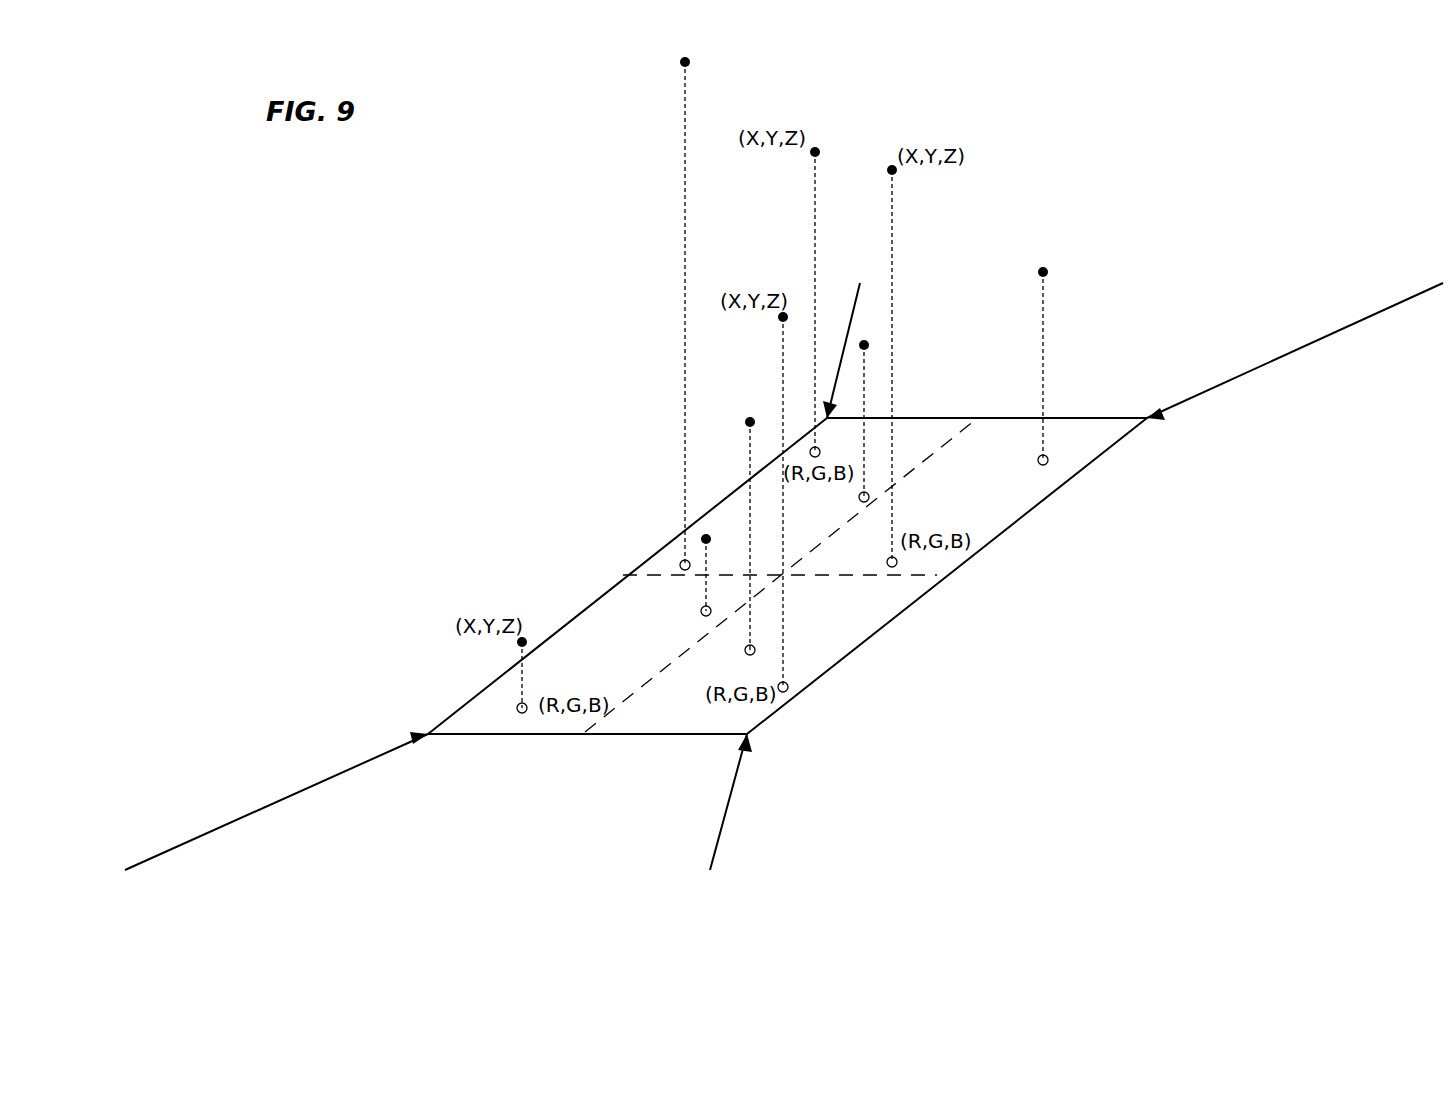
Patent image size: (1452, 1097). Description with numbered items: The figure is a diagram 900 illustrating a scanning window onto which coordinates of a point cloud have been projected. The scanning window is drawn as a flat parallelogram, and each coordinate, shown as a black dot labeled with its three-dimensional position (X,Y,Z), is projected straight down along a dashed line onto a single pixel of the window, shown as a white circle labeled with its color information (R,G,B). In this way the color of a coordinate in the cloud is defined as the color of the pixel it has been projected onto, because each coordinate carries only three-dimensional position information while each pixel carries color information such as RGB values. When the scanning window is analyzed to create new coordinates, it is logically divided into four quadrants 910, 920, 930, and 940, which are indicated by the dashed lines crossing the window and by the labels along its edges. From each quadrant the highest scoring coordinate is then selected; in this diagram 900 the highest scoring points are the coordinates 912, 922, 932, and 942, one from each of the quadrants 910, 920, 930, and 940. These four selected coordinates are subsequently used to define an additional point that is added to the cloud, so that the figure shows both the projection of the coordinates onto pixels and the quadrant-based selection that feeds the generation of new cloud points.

The diagram 900 is at (1134, 646).
The quadrant 910 is at (1096, 418).
The highest scoring coordinate 912 is at (1049, 272).
The quadrant 920 is at (922, 418).
The highest scoring coordinate 922 is at (691, 62).
The quadrant 930 is at (510, 734).
The highest scoring coordinate 932 is at (706, 534).
The quadrant 940 is at (832, 666).
The highest scoring coordinate 942 is at (745, 422).